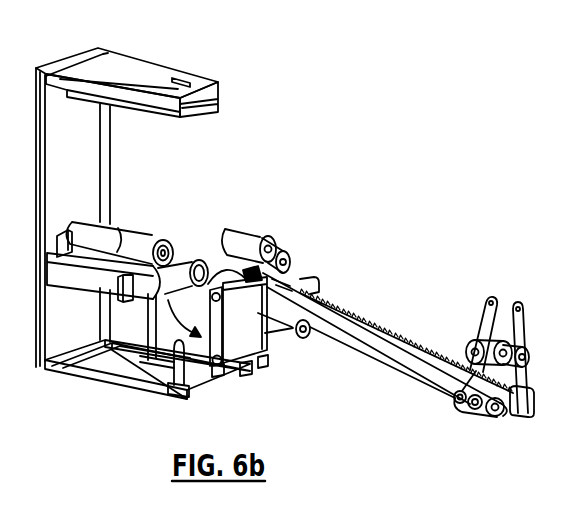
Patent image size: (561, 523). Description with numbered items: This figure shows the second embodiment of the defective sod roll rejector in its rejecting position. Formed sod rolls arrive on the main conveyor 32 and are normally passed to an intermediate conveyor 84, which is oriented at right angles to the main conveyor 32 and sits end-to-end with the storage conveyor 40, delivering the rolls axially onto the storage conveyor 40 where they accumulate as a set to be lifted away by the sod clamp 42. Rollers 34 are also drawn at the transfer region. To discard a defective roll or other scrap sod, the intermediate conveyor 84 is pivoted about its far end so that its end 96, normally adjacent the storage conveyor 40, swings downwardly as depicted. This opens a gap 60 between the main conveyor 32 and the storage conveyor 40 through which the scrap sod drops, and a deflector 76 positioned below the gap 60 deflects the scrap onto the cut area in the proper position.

The main conveyor 32 is at (403, 340).
The rollers 34 is at (280, 240).
The storage conveyor 40 is at (53, 236).
The sod clamp 42 is at (210, 84).
The gap 60 is at (190, 264).
The deflector 76 is at (171, 394).
The intermediate conveyor 84 is at (258, 345).
The end of the intermediate conveyor 96 is at (218, 373).